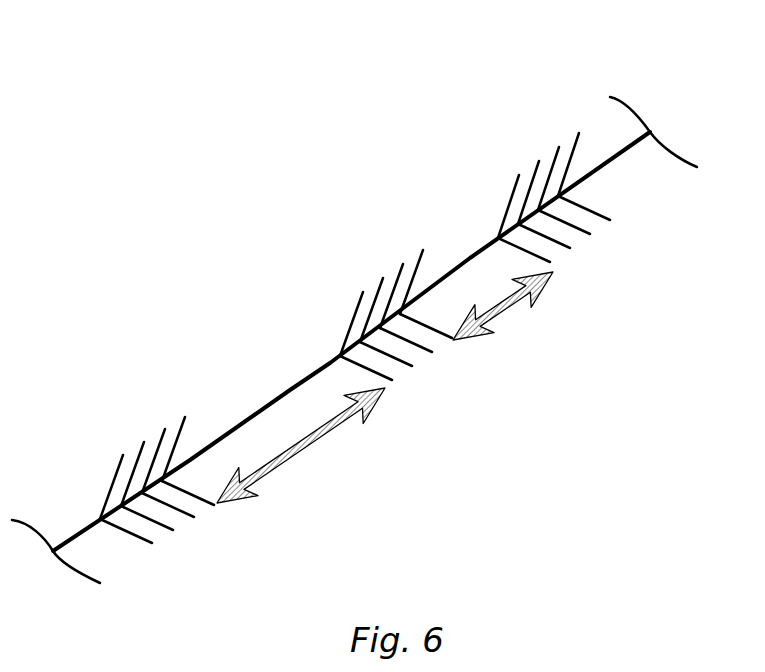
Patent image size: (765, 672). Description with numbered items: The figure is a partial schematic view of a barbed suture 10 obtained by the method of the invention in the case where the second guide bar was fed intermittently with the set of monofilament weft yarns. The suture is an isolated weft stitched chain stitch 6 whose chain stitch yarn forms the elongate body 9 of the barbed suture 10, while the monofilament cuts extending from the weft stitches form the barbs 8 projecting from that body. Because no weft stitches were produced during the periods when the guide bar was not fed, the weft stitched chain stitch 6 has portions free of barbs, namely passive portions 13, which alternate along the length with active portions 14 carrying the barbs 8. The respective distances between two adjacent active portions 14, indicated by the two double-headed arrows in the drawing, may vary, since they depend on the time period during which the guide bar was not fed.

The barbed suture 10 is at (477, 90).
The weft stitched chain stitch 6 is at (669, 108).
The elongate body 9 is at (263, 410).
The barbs 8 is at (117, 472).
The active portions 14 is at (191, 564).
The passive portions 13 is at (203, 395).